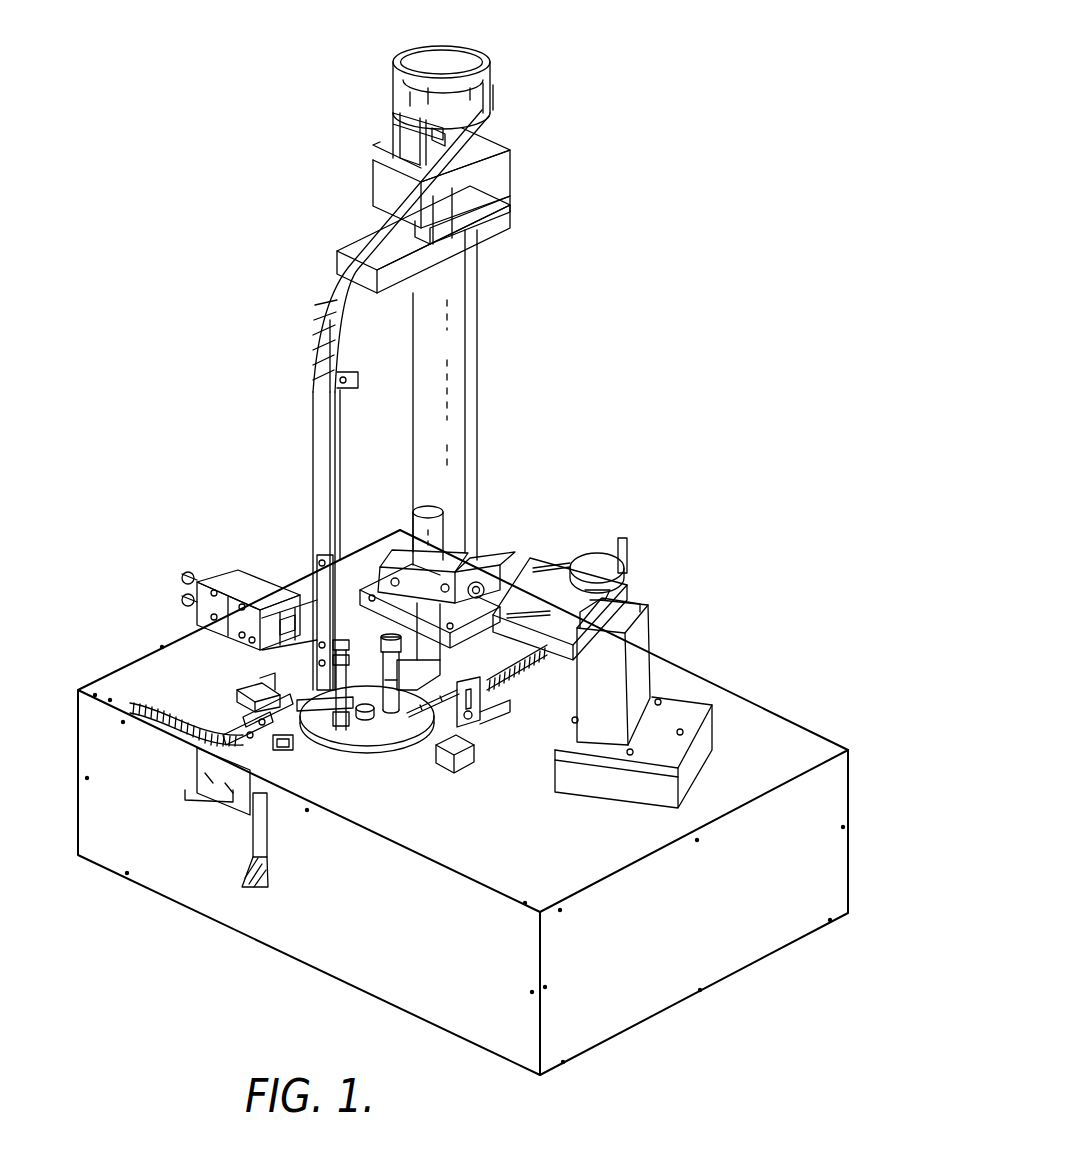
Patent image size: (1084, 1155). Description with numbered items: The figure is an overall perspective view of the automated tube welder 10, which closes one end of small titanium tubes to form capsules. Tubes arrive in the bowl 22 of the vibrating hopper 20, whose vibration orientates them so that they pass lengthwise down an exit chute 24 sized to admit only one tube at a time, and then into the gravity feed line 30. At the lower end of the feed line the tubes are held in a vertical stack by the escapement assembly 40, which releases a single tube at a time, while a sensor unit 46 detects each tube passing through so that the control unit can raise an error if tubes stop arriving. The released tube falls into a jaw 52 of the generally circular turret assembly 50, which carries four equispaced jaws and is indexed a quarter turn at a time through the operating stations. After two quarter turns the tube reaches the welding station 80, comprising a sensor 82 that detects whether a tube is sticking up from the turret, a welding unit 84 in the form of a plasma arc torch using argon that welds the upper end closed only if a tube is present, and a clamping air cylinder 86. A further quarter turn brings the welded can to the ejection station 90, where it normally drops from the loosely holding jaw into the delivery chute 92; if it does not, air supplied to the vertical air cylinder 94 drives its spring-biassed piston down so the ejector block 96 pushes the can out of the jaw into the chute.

The automated tube welder 10 is at (628, 226).
The vibrating hopper 20 is at (497, 172).
The bowl 22 is at (452, 76).
The exit chute 24 is at (354, 243).
The gravity feed line 30 is at (318, 437).
The escapement assembly 40 is at (222, 582).
The sensor unit 46 is at (240, 691).
The turret assembly 50 is at (366, 757).
The jaw 52 is at (360, 740).
The welding station 80 is at (545, 757).
The sensor 82 is at (495, 686).
The welding unit 84 is at (440, 618).
The clamping air cylinder 86 is at (462, 763).
The ejection station 90 is at (318, 787).
The delivery chute 92 is at (253, 880).
The vertical air cylinder 94 is at (335, 682).
The ejector block 96 is at (334, 730).